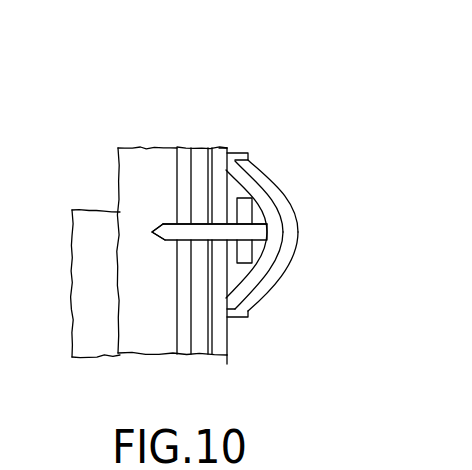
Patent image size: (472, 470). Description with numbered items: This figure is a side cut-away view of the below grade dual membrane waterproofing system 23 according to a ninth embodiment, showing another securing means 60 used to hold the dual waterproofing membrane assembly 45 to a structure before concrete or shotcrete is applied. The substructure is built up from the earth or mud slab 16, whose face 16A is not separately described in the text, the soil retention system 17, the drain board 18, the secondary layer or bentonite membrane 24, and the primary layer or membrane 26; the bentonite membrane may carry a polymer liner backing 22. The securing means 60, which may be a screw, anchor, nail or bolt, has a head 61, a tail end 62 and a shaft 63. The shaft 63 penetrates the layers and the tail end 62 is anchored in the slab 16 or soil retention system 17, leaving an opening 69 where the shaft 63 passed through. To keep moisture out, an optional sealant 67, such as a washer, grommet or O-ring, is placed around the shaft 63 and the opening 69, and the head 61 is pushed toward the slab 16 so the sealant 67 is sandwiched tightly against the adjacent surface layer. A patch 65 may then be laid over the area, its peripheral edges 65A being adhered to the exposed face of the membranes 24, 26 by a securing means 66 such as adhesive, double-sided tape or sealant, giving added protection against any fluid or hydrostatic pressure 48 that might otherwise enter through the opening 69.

The earth or mud slab 16 is at (122, 187).
The panel surface 16A is at (170, 163).
The soil retention system 17 is at (185, 168).
The drain board 18 is at (200, 168).
The polymer liner backing 22 is at (219, 152).
The below grade dual membrane waterproofing system 23 is at (265, 63).
The secondary layer or membrane 24 is at (226, 156).
The primary layer or membrane 26 is at (226, 330).
The dual waterproofing membrane assembly 45 is at (224, 357).
The fluid or hydrostatic pressure 48 is at (96, 216).
The securing means 60 is at (297, 235).
The head 61 is at (286, 232).
The tail end 62 is at (168, 242).
The shaft 63 is at (220, 235).
The patch 65 is at (293, 229).
The peripheral edges 65A is at (252, 163).
The securing means 66 is at (283, 262).
The sealant 67 is at (246, 208).
The opening 69 is at (203, 222).